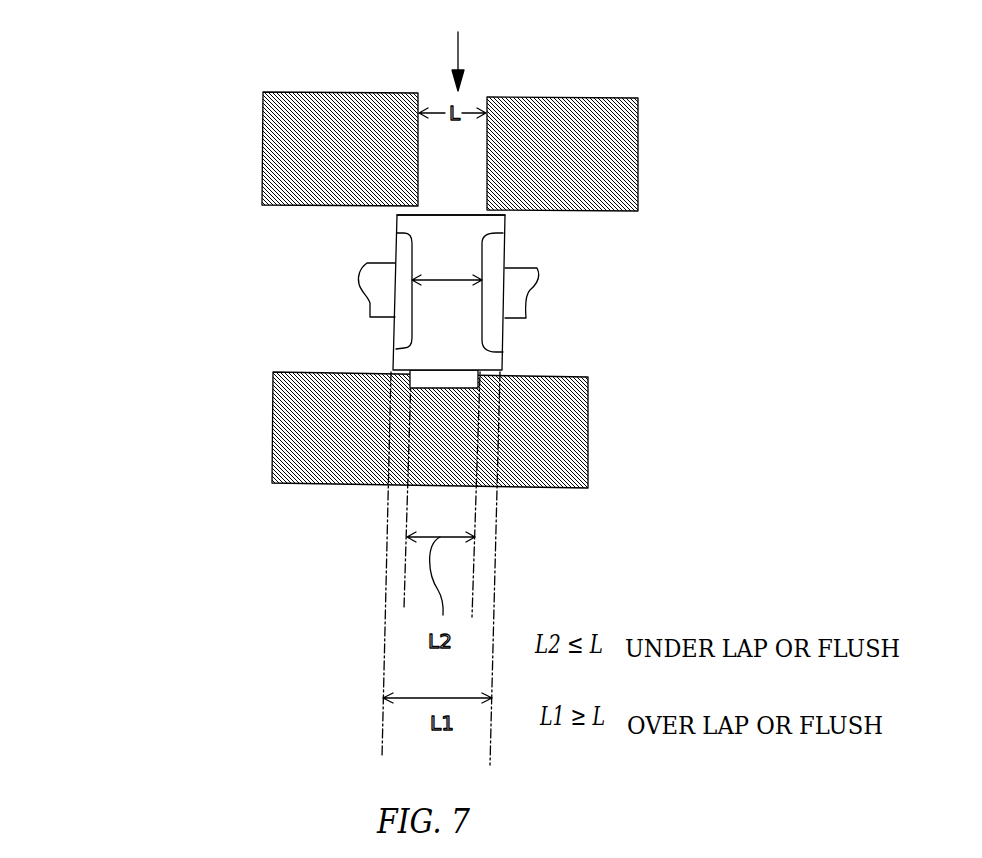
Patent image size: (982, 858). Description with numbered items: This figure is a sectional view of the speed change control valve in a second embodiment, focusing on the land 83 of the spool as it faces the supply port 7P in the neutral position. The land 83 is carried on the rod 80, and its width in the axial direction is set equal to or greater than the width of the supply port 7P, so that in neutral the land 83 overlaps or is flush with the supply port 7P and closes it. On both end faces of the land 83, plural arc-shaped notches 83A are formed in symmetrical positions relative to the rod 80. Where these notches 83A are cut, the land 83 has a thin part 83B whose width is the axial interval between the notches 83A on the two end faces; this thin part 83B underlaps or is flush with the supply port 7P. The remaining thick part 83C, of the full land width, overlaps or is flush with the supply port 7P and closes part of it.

The supply port 7P is at (461, 48).
The rod 80 is at (532, 281).
The land 83 is at (505, 373).
The notch 83A is at (657, 337).
The thin part 83B is at (445, 278).
The thick part 83C is at (457, 215).